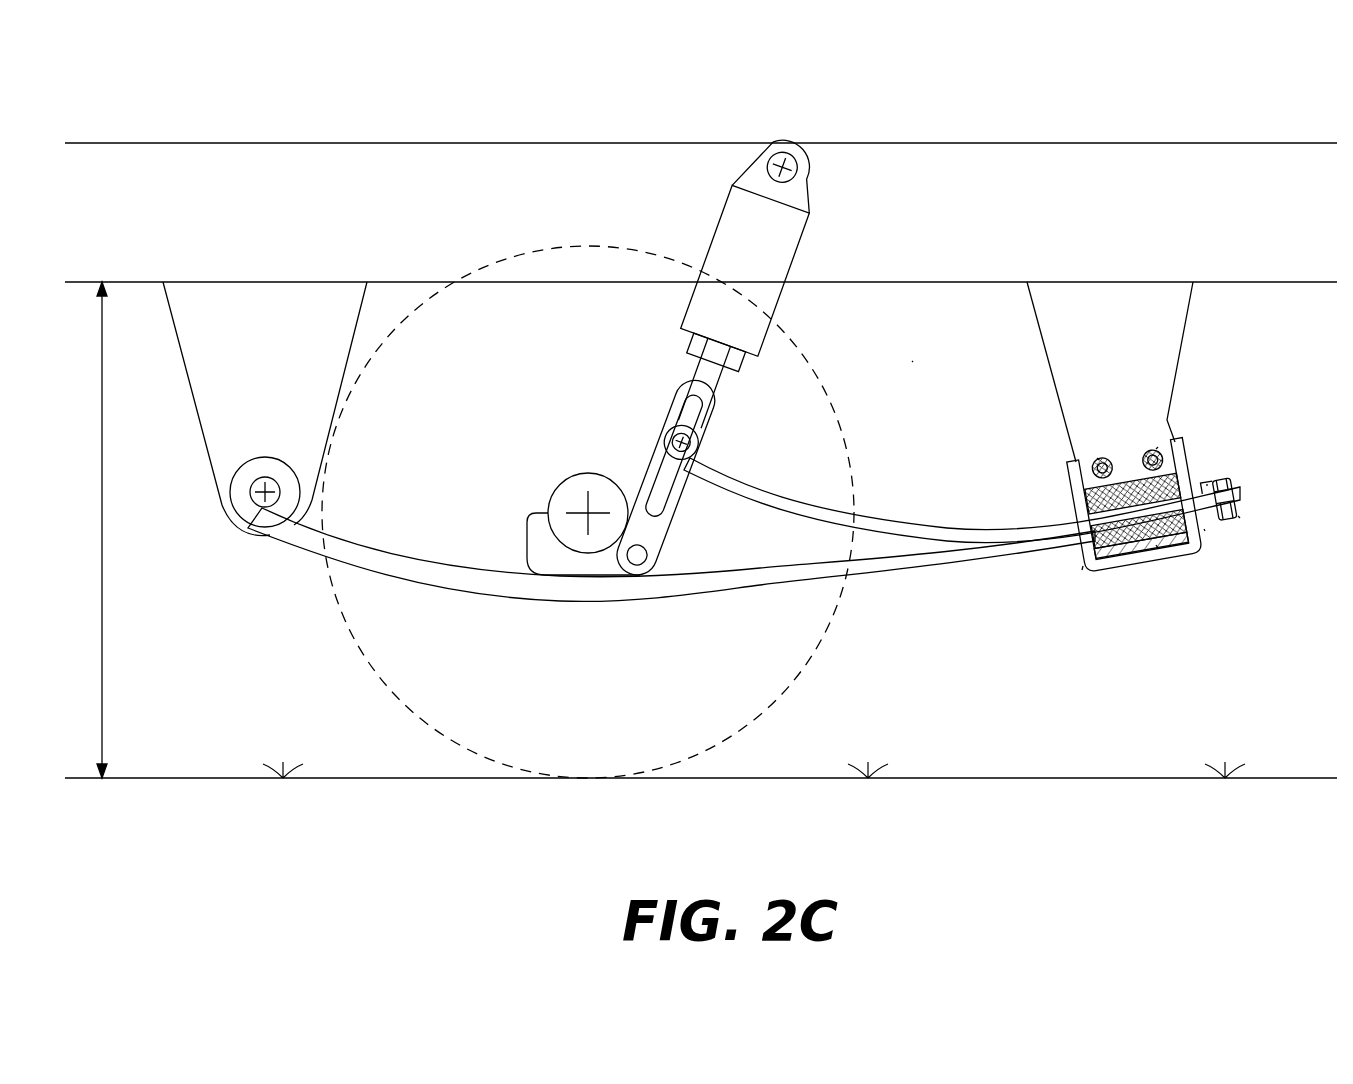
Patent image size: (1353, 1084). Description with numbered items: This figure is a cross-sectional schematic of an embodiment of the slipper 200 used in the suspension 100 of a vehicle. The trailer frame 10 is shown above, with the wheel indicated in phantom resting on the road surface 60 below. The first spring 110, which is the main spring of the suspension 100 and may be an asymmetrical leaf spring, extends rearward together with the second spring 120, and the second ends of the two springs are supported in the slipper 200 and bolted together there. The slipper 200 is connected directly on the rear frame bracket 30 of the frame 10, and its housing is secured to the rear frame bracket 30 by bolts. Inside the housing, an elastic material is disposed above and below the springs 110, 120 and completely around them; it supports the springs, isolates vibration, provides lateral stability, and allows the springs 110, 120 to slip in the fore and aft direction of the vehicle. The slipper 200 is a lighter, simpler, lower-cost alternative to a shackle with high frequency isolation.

The trailer frame 10 is at (1100, 162).
The rear frame bracket 30 is at (1180, 334).
The road surface 60 is at (954, 853).
The suspension 100 is at (912, 362).
The first spring 110 is at (1007, 557).
The second spring 120 is at (943, 528).
The slipper 200 is at (1202, 481).